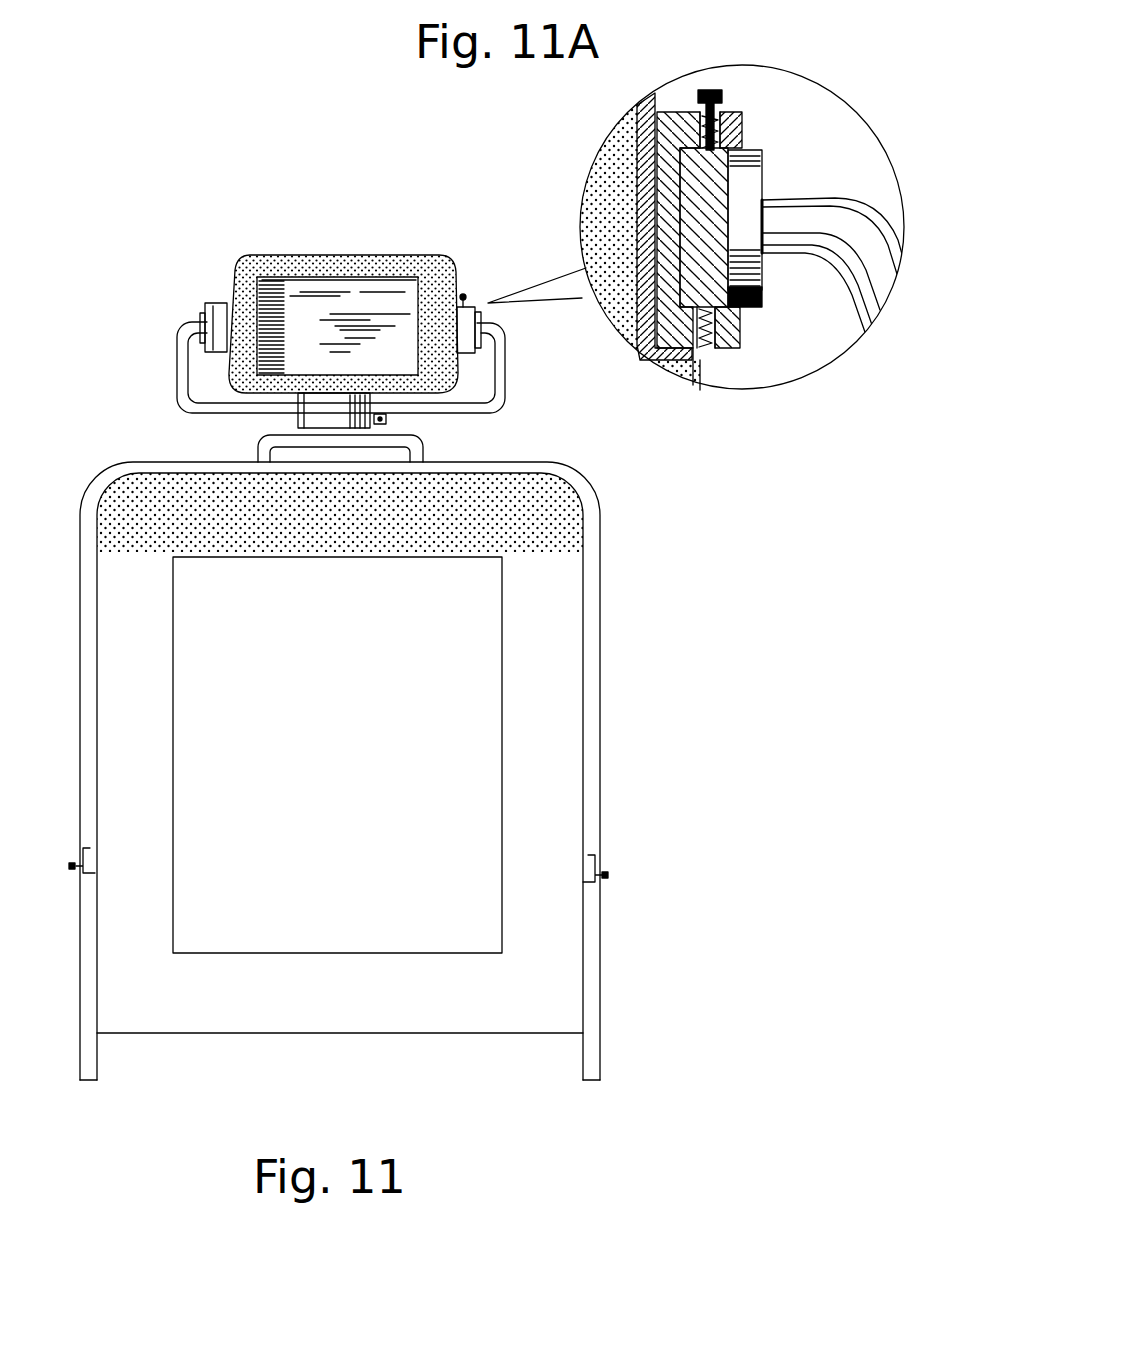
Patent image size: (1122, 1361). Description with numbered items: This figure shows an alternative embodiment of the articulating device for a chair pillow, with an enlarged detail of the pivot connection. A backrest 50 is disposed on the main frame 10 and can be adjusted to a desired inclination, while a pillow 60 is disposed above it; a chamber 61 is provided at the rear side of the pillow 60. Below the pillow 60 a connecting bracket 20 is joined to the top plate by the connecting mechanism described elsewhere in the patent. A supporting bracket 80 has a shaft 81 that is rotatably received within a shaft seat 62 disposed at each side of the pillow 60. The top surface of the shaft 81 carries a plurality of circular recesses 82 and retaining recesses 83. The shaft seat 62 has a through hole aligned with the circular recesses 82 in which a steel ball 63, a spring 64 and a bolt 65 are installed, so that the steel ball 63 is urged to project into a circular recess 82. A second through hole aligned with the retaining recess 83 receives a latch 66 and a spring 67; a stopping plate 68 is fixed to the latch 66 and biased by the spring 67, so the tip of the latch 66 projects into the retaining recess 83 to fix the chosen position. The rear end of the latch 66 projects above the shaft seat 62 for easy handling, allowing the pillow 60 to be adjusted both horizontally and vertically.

In FIG. 11, the main frame 10 is at (92, 495).
In FIG. 11, the connecting bracket 20 is at (258, 452).
In FIG. 11, the backrest 50 is at (560, 520).
In FIG. 11, the pillow 60 is at (318, 255).
In FIG. 11A, the pillow 60 is at (598, 150).
In FIG. 11, the chamber 61 is at (352, 300).
In FIG. 11, the shaft seat 62 is at (472, 310).
In FIG. 11A, the shaft seat 62 is at (724, 118).
In FIG. 11A, the steel ball 63 is at (740, 328).
In FIG. 11A, the spring 64 is at (743, 347).
In FIG. 11A, the bolt 65 is at (707, 363).
In FIG. 11, the latch 66 is at (462, 295).
In FIG. 11A, the latch 66 is at (706, 92).
In FIG. 11A, the spring 67 is at (744, 118).
In FIG. 11A, the stopping plate 68 is at (730, 138).
In FIG. 11, the supporting bracket 80 is at (177, 348).
In FIG. 11A, the supporting bracket 80 is at (846, 222).
In FIG. 11, the shaft 81 is at (482, 320).
In FIG. 11A, the shaft 81 is at (703, 220).
In FIG. 11A, the circular recess 82 is at (714, 287).
In FIG. 11A, the retaining recess 83 is at (746, 185).